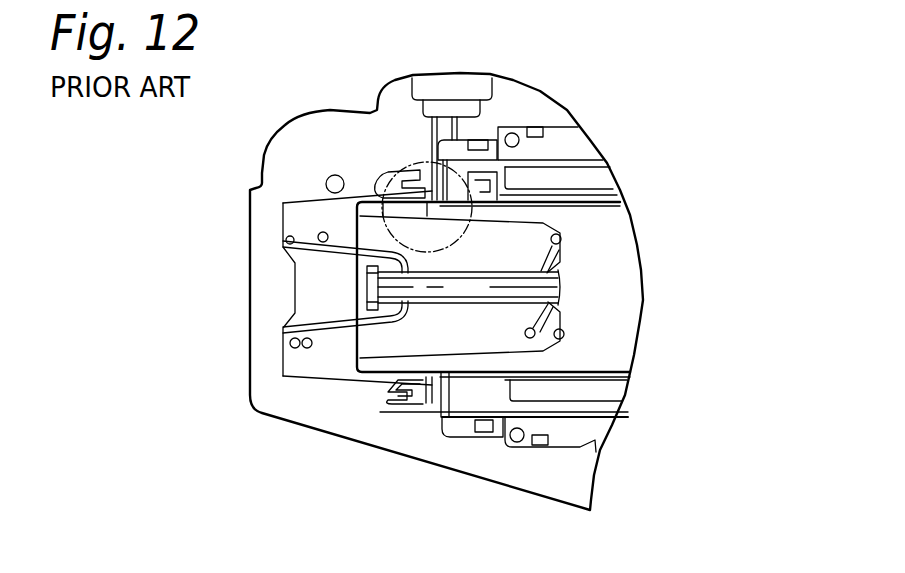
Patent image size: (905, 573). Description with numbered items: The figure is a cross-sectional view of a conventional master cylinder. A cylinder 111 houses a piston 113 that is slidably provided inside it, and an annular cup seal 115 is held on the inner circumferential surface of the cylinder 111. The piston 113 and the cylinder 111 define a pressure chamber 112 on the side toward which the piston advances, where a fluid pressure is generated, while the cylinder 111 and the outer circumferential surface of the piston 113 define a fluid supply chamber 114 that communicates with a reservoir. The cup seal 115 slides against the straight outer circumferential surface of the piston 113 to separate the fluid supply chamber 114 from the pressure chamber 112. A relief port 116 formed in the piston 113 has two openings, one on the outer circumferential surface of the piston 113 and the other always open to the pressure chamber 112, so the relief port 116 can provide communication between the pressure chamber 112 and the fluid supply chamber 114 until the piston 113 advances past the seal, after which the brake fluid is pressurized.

The cylinder 111 is at (288, 127).
The pressure chamber 112 is at (318, 367).
The piston 113 is at (578, 352).
The fluid supply chamber 114 is at (437, 190).
The cup seal 115 is at (378, 108).
The relief port 116 is at (410, 213).